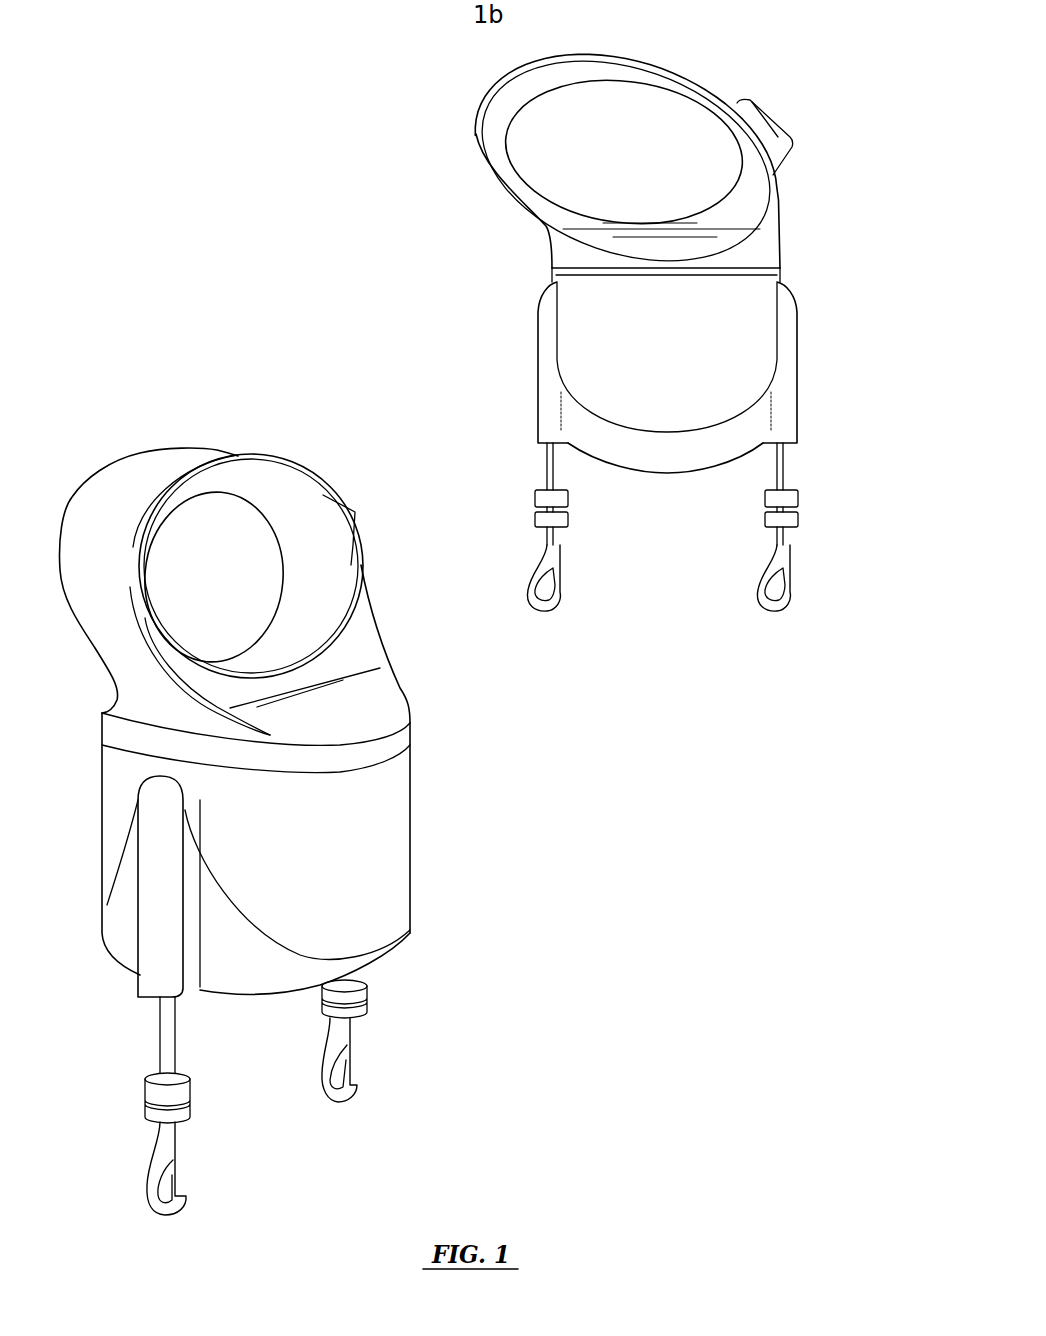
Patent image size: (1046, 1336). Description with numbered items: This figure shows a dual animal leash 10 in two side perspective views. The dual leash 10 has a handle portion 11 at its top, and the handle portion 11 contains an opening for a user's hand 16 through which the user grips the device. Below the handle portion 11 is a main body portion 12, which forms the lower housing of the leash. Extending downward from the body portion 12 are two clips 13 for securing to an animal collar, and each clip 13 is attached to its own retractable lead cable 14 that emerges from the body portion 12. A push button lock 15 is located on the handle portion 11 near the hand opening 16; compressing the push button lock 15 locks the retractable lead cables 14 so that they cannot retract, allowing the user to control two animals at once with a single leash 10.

The dual leash 10 is at (682, 671).
The handle portion 11 is at (477, 132).
The main body portion 12 is at (543, 393).
The clip 13 is at (785, 562).
The retractable lead cable 14 is at (552, 473).
The push button lock 15 is at (755, 100).
The opening for a user's hand 16 is at (444, 367).